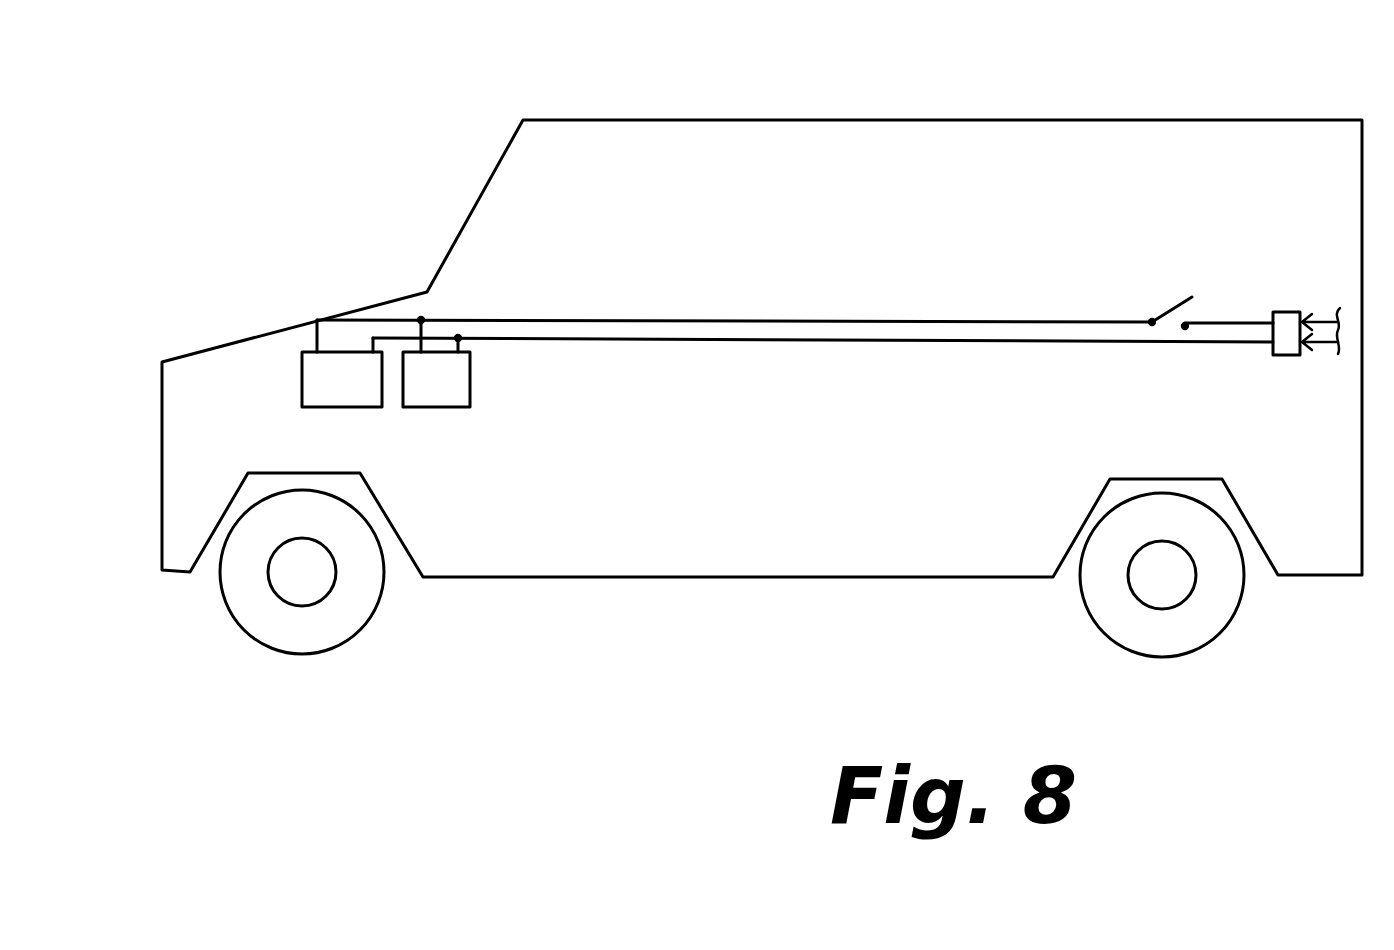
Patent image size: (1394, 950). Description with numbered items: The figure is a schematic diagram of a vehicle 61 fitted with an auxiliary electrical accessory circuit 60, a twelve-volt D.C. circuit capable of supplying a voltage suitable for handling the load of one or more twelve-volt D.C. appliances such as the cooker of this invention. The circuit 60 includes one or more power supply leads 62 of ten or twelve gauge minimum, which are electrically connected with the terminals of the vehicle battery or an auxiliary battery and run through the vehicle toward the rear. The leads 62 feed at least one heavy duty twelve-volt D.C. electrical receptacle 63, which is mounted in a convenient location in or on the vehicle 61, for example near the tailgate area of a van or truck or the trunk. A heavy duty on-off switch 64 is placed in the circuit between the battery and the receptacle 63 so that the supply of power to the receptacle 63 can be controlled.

The auxiliary electrical accessory circuit 60 is at (770, 220).
The vehicle 61 is at (1007, 117).
The power supply leads 62 is at (913, 322).
The heavy duty 12V D.C. electrical receptacle 63 is at (1287, 312).
The on-off switch 64 is at (1170, 313).